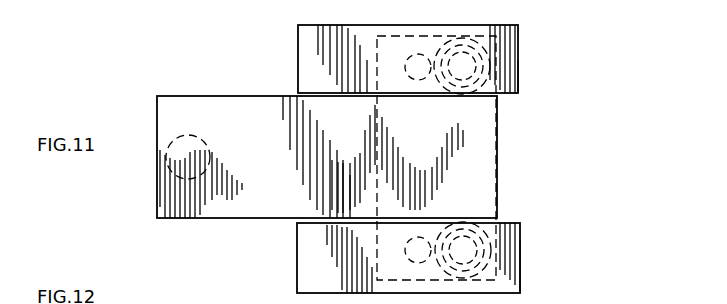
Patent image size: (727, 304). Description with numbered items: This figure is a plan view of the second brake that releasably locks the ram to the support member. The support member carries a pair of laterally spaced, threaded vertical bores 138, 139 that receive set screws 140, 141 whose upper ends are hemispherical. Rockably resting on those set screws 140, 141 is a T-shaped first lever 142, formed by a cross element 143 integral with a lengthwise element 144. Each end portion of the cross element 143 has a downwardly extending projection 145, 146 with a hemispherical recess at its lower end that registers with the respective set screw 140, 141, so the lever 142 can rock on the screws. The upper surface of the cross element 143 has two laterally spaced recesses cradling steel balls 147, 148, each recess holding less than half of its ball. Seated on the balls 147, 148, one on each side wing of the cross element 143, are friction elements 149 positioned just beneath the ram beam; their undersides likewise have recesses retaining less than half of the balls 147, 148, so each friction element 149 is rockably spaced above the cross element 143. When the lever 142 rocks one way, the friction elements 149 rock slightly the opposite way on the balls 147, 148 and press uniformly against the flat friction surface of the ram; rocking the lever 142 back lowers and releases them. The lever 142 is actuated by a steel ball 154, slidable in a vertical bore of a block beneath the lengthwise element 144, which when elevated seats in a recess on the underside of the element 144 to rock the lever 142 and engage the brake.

The vertical bore 138 is at (497, 55).
The vertical bore 139 is at (480, 238).
The set screw 140 is at (475, 75).
The set screw 141 is at (463, 250).
The first lever 142 is at (260, 92).
The cross element 143 is at (485, 130).
The lengthwise element 144 is at (277, 175).
The downwardly extending projection 145 is at (497, 77).
The downwardly extending projection 146 is at (483, 250).
The ball 147 is at (409, 66).
The ball 148 is at (408, 245).
The friction element 149 is at (307, 38).
The ball 154 is at (206, 146).